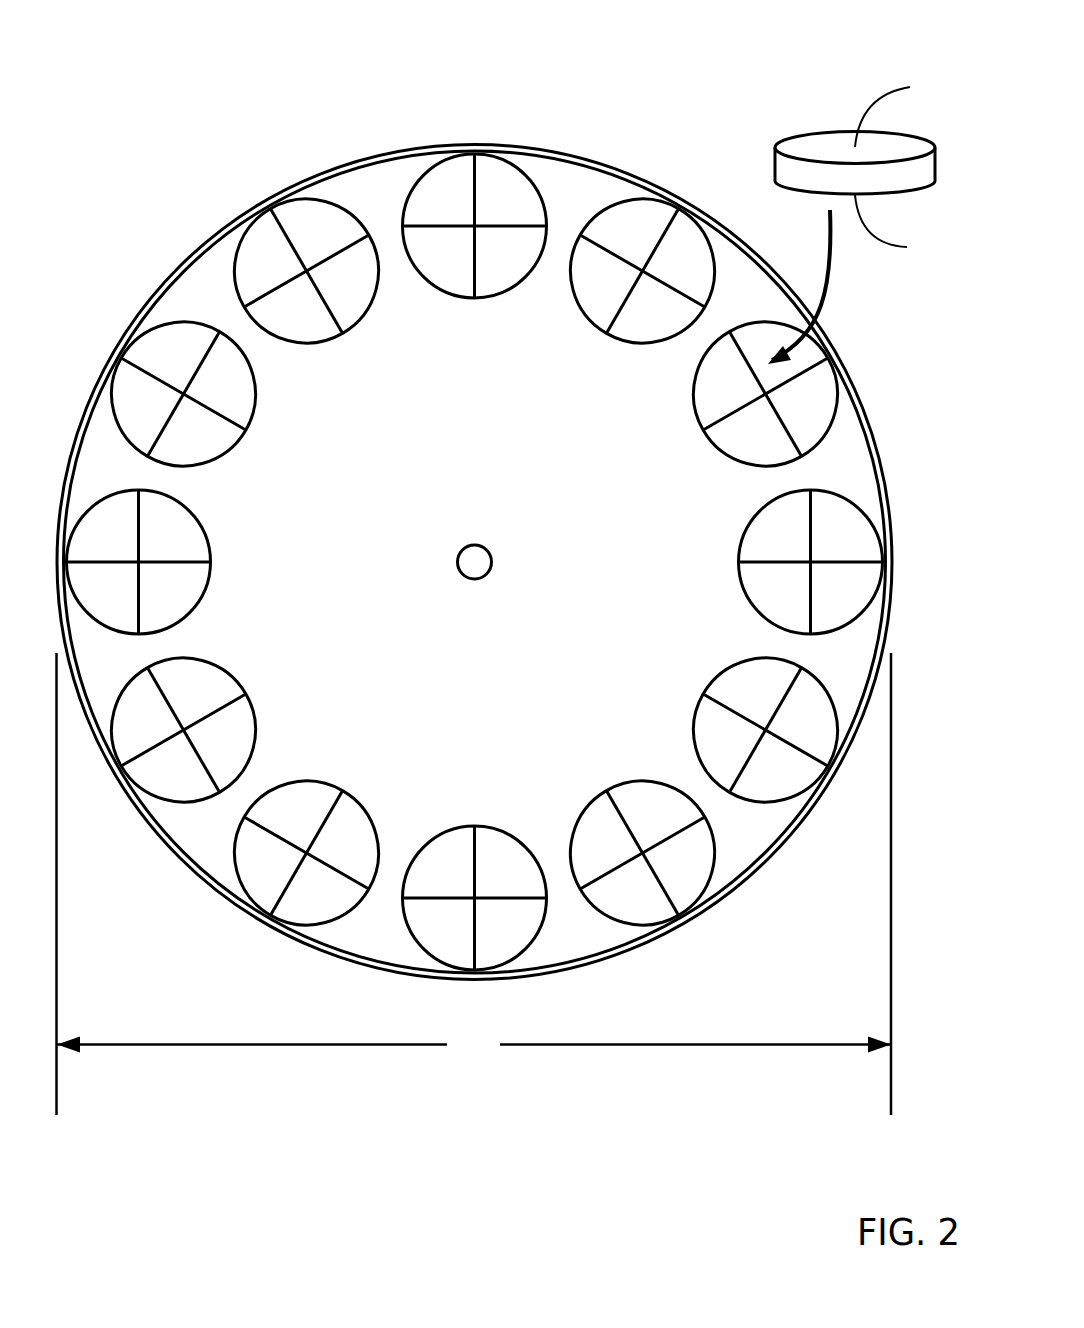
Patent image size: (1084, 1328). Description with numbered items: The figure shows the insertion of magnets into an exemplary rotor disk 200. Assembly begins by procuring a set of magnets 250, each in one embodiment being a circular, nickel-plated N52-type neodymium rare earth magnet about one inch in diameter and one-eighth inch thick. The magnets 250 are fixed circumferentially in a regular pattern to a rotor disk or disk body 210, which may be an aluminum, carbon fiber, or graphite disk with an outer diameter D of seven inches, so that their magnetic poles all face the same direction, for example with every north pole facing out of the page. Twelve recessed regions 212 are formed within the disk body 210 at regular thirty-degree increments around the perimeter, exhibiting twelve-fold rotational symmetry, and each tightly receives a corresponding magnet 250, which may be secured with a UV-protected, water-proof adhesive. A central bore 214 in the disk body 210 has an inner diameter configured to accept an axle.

The rotor disk 200 is at (238, 80).
The disk body 210 is at (555, 152).
The recessed regions 212 is at (177, 350).
The central bore 214 is at (473, 559).
The magnets 250 is at (836, 92).